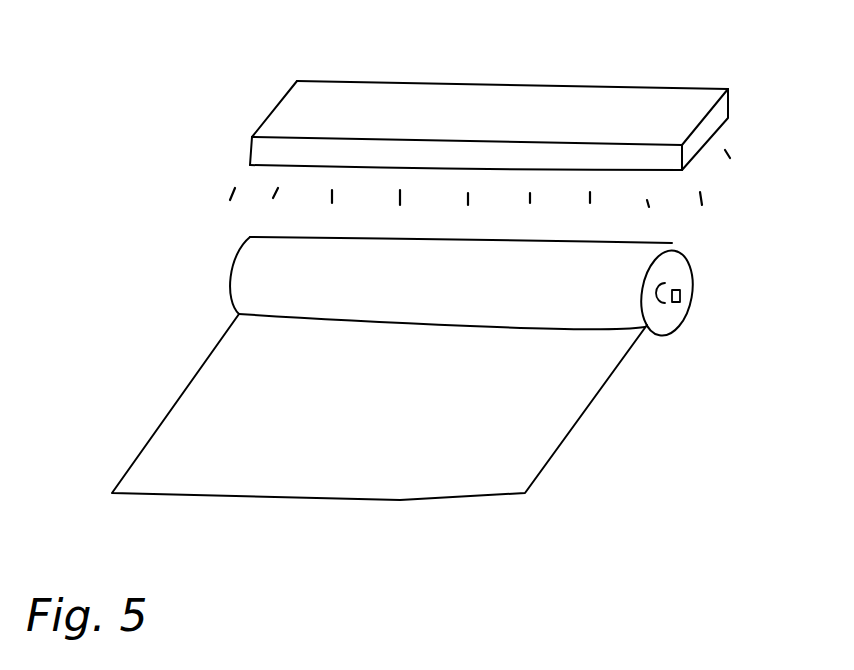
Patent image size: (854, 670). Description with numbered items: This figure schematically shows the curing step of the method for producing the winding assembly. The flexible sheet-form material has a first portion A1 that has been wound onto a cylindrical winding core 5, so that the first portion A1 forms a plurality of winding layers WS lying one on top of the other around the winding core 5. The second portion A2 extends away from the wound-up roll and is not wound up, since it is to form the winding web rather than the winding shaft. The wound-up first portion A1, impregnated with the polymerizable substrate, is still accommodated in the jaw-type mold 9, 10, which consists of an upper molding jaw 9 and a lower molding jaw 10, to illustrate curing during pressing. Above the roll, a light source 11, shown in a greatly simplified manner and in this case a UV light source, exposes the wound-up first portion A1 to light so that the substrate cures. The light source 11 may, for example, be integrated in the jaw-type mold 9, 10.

The light source 11 is at (643, 102).
The upper molding jaw 9 is at (673, 263).
The lower molding jaw 10 is at (666, 320).
The winding layers WS is at (672, 288).
The first portion A1 is at (734, 272).
The winding core 5 is at (683, 305).
The second portion A2 is at (379, 407).